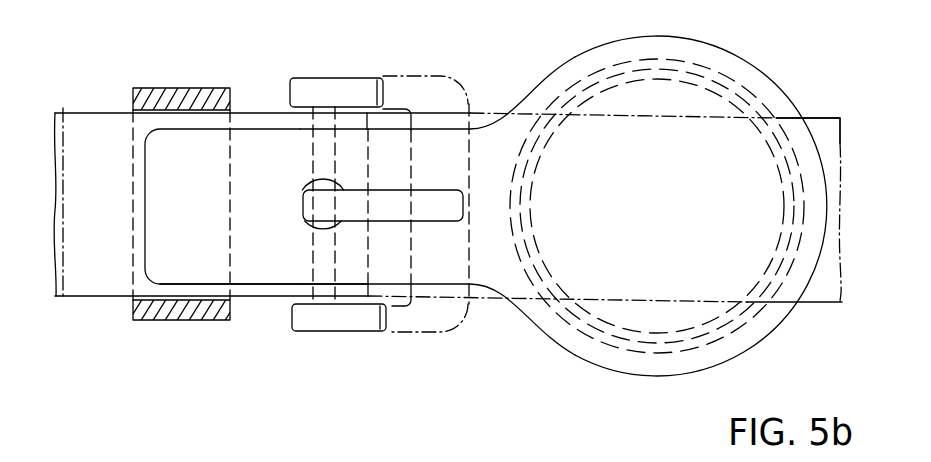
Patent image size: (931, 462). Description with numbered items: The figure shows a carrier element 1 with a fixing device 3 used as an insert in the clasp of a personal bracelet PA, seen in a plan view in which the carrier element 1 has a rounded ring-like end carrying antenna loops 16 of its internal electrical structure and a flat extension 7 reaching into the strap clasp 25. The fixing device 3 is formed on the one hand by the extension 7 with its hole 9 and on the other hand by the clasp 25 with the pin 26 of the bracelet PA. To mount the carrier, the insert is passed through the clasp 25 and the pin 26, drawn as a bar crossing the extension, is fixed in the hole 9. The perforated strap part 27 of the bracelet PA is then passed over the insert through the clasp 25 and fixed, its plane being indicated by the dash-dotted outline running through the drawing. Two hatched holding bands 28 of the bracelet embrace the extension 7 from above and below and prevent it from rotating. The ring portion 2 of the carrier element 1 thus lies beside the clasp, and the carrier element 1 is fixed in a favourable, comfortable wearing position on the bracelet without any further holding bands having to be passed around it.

The carrier element 1 is at (545, 327).
The ring portion 2 is at (590, 340).
The fixing device 3 is at (160, 222).
The extension 7 is at (252, 272).
The hole 9 is at (327, 180).
The antenna loops 16 is at (555, 275).
The strap clasp 25 is at (412, 90).
The pin 26 is at (437, 200).
The perforated strap part 27 is at (820, 283).
The holding band 28 is at (172, 90).
The personal bracelet PA is at (87, 282).